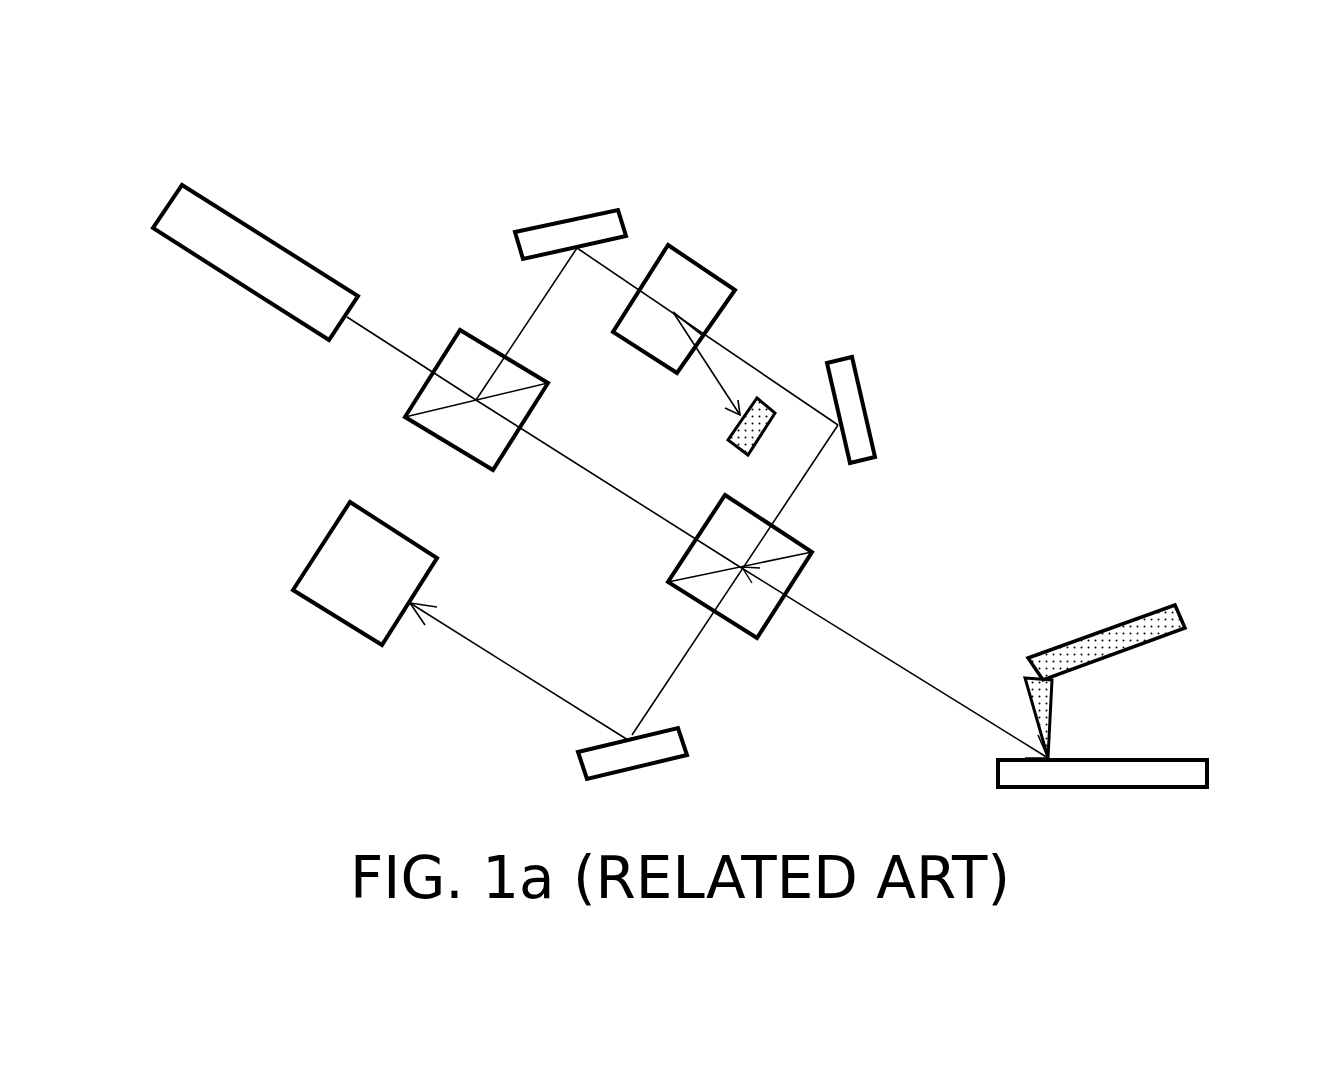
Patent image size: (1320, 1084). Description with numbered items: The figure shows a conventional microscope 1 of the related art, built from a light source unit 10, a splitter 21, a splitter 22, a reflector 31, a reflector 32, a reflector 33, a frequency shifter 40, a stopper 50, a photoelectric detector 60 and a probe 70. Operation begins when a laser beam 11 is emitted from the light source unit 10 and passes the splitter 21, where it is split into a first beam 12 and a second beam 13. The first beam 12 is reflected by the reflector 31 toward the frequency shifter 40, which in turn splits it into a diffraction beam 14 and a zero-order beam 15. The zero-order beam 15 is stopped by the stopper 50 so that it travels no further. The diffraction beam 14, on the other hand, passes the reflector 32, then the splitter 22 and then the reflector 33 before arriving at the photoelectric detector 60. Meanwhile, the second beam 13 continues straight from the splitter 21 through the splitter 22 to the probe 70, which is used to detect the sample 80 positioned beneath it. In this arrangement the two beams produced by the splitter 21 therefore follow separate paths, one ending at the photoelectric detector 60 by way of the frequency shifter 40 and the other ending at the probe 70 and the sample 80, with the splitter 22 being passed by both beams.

The conventional microscope 1 is at (123, 89).
The light source unit 10 is at (272, 237).
The laser beam 11 is at (403, 360).
The first beam 12 is at (532, 313).
The second beam 13 is at (623, 492).
The diffraction beam 14 is at (747, 360).
The zero-order beam 15 is at (720, 392).
The splitter 21 is at (448, 443).
The splitter 22 is at (802, 575).
The reflector 31 is at (568, 220).
The reflector 32 is at (853, 408).
The reflector 33 is at (635, 768).
The frequency shifter 40 is at (700, 265).
The stopper 50 is at (740, 450).
The photoelectric detector 60 is at (320, 543).
The probe 70 is at (1043, 713).
The sample 80 is at (1195, 773).